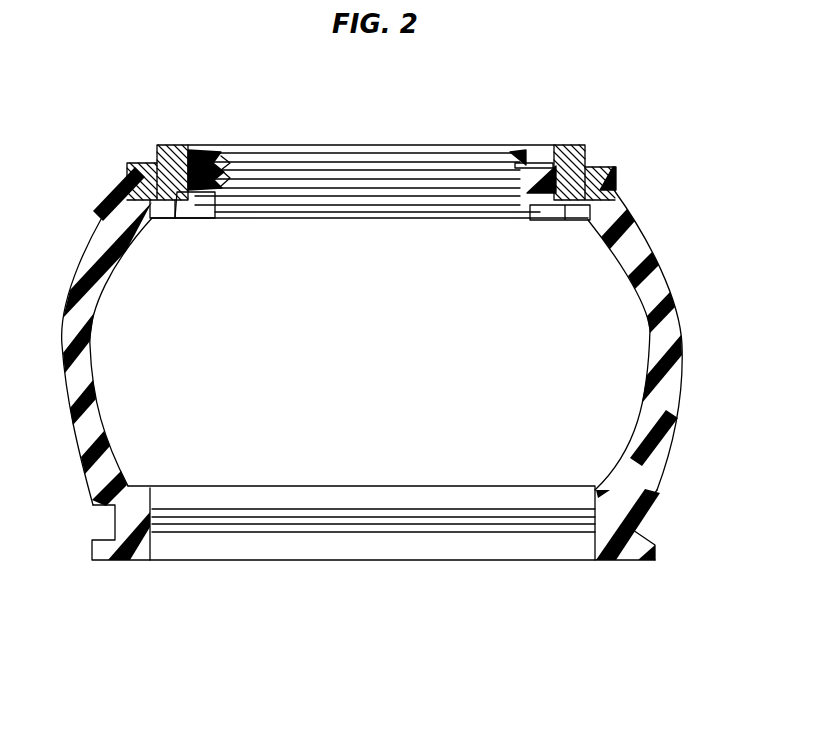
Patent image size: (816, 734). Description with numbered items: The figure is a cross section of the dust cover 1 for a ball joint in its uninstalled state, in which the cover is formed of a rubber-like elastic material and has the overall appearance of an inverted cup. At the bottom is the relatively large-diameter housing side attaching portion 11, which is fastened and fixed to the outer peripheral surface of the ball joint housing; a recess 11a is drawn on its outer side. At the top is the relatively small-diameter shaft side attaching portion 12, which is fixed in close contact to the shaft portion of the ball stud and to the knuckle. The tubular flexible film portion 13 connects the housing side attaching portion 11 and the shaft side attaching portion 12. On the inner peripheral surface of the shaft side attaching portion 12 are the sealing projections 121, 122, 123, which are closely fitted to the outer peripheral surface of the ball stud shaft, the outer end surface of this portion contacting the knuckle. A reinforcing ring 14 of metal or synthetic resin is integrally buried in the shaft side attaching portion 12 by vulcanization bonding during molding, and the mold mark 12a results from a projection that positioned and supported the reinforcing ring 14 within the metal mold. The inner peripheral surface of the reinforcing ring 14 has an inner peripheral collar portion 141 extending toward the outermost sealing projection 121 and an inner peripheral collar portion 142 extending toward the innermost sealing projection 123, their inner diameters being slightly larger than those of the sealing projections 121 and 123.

The dust cover 1 is at (78, 193).
The housing side attaching portion 11 is at (623, 561).
The groove 11a is at (640, 528).
The shaft side attaching portion 12 is at (540, 148).
The mold mark 12a is at (165, 220).
The sealing projection 121 is at (495, 155).
The sealing projection 122 is at (477, 155).
The sealing projection 123 is at (500, 205).
The flexible film portion 13 is at (670, 320).
The reinforcing ring 14 is at (157, 143).
The inner peripheral collar portion 141 is at (195, 165).
The inner peripheral collar portion 142 is at (205, 212).